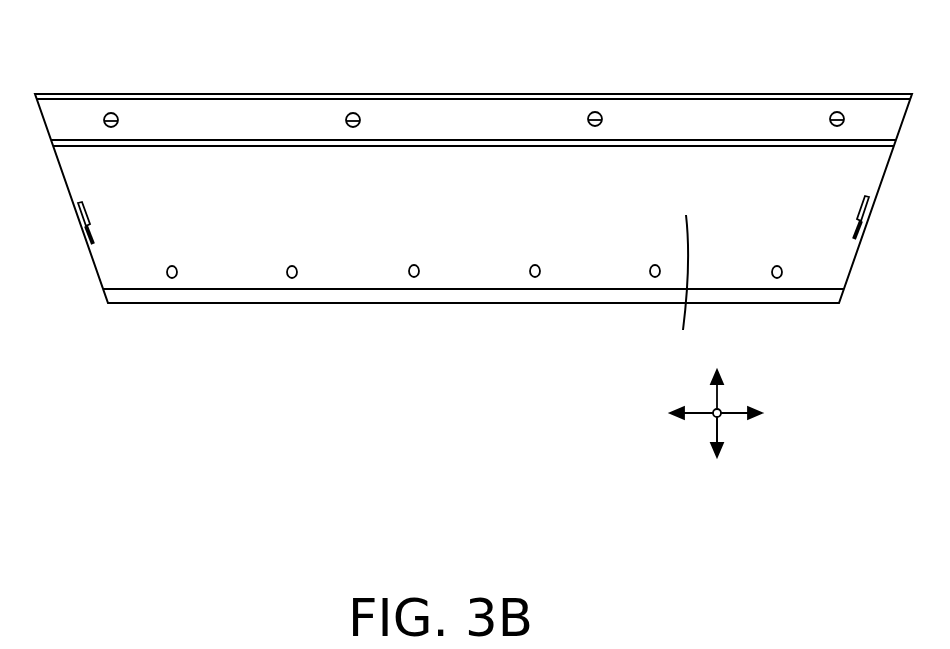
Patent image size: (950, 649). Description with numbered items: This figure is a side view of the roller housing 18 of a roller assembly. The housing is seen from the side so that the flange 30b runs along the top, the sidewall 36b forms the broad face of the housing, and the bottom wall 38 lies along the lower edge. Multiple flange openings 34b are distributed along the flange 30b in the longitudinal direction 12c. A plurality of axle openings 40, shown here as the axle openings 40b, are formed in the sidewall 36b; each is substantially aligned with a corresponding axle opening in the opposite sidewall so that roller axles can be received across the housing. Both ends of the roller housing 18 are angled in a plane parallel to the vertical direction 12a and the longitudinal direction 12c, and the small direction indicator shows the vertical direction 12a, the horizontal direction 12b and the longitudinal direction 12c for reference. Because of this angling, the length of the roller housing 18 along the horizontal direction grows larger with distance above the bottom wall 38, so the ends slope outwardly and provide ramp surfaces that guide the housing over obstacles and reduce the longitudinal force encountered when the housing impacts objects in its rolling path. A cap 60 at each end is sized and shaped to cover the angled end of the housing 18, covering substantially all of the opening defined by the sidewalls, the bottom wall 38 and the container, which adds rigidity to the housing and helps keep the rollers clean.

The roller housing 18 is at (455, 64).
The flange 30b is at (893, 106).
The flange openings 34b is at (118, 114).
The sidewall 36b is at (686, 286).
The bottom wall 38 is at (197, 304).
The axle openings 40 is at (652, 266).
The axle openings 40b is at (171, 278).
The cap 60 is at (70, 194).
The vertical direction 12a is at (715, 405).
The horizontal direction 12b is at (721, 416).
The longitudinal direction 12c is at (735, 412).